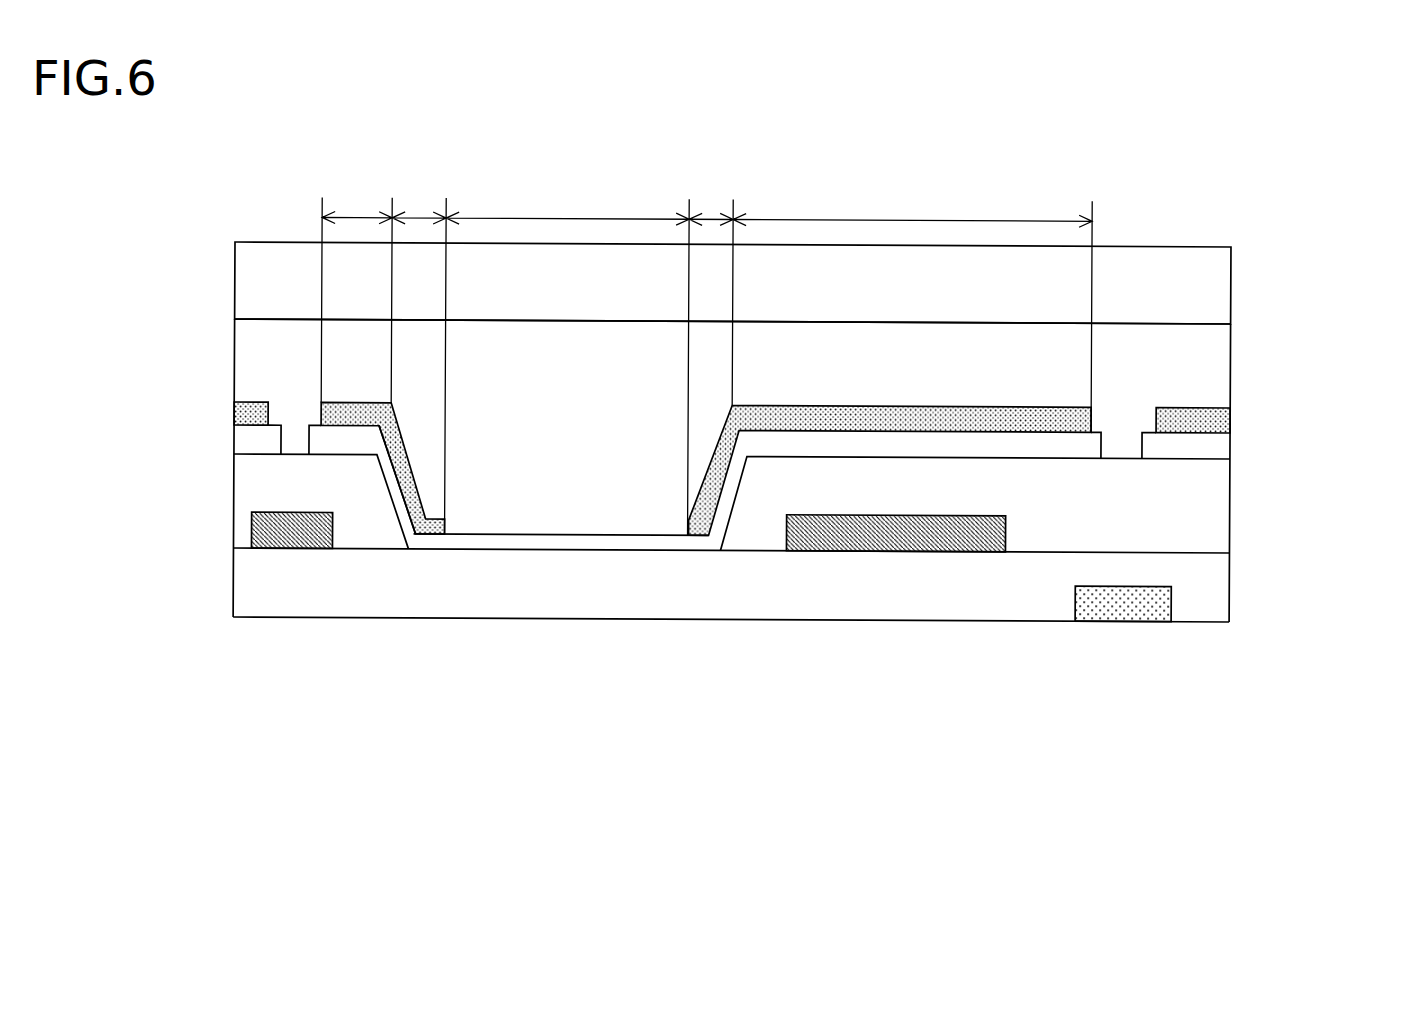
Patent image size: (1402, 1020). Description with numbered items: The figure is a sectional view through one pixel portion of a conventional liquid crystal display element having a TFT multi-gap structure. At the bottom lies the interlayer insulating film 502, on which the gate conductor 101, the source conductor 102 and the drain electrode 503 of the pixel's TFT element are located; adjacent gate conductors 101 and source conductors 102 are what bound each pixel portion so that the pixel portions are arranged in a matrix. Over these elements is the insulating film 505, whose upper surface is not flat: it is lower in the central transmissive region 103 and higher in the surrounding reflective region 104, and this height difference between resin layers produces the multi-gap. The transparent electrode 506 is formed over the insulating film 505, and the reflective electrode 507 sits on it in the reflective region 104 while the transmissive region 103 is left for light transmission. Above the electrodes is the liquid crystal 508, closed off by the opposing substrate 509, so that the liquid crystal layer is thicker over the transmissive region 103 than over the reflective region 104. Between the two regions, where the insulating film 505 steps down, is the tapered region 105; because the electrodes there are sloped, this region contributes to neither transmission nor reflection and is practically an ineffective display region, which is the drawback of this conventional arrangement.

The gate conductor 101 is at (1103, 610).
The source conductor 102 is at (307, 548).
The transmissive region 103 is at (567, 197).
The reflective region 104 is at (706, 299).
The tapered region 105 is at (565, 349).
The interlayer insulating film 502 is at (1198, 588).
The drain electrode 503 is at (837, 550).
The insulating film 505 is at (757, 532).
The transparent electrode 506 is at (1217, 447).
The reflective electrode 507 is at (1203, 415).
The liquid crystal 508 is at (1188, 342).
The opposing substrate 509 is at (1188, 288).